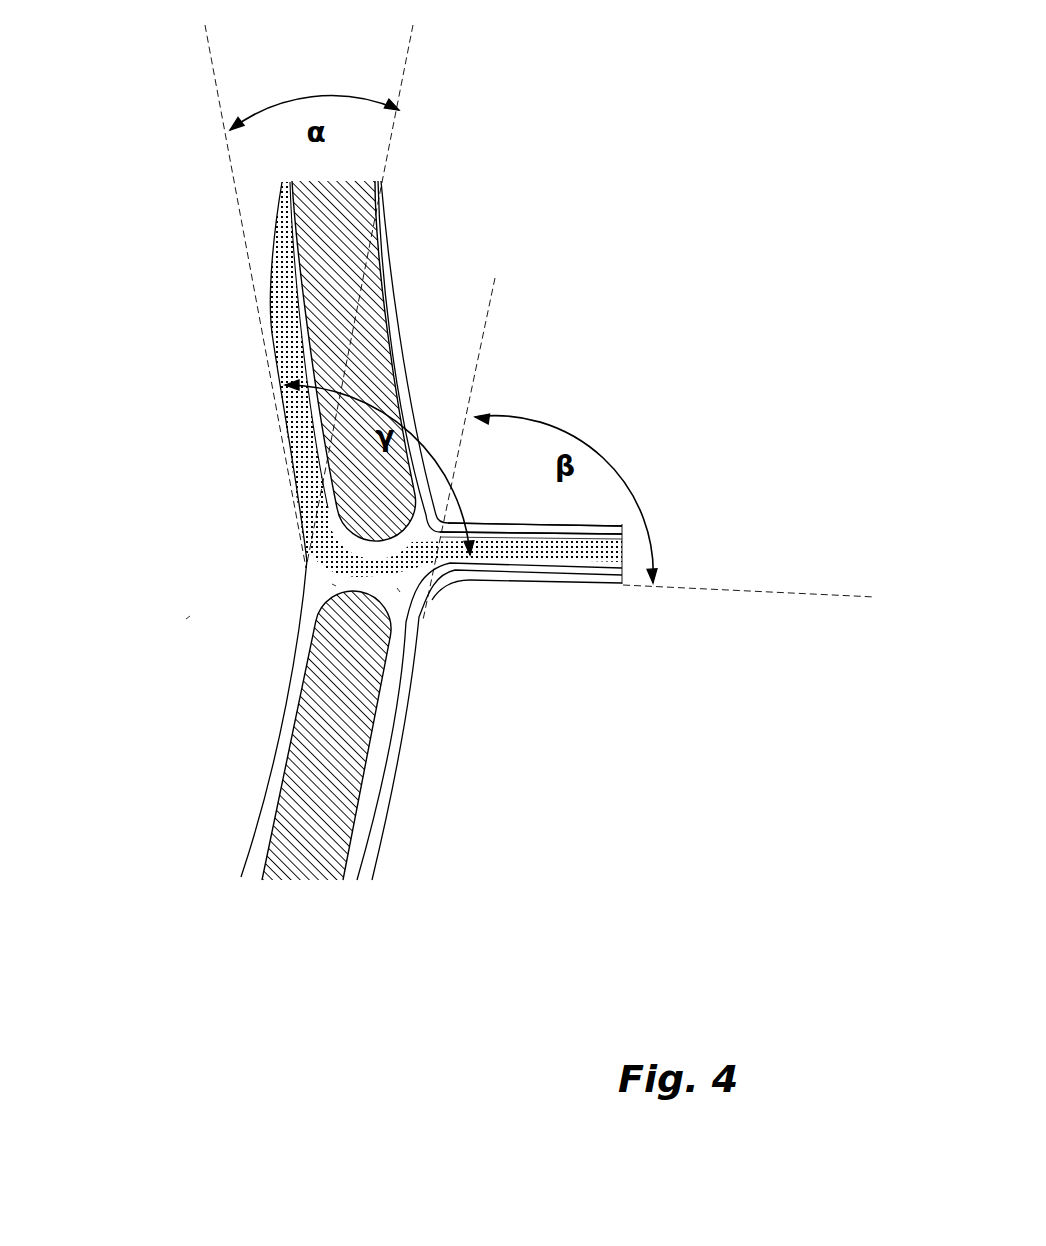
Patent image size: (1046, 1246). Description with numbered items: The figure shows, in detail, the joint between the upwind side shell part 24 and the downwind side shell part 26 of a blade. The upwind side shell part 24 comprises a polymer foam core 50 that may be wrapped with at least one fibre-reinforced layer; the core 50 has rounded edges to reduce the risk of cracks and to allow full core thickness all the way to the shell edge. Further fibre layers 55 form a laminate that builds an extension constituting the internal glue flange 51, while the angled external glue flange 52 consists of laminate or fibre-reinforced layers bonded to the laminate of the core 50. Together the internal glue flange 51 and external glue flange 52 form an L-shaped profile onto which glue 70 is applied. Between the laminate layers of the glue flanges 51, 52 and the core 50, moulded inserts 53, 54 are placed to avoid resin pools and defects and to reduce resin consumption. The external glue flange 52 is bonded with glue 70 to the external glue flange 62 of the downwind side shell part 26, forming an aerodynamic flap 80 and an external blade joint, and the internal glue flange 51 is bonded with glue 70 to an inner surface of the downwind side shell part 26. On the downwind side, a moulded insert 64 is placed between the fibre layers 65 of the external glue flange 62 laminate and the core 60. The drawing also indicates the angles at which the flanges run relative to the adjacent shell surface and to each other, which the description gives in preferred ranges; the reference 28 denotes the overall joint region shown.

The upwind side shell part 24 is at (343, 720).
The downwind side shell part 26 is at (379, 371).
The junction region 28 is at (180, 624).
The polymer foam core 50 is at (310, 778).
The internal glue flange 51 is at (272, 407).
The external glue flange 52 is at (575, 577).
The moulded insert 53 is at (326, 582).
The moulded insert 54 is at (404, 598).
The fibre layers 55 is at (290, 677).
The core 60 is at (357, 367).
The external glue flange 62 is at (527, 522).
The moulded insert 64 is at (473, 523).
The fibre layers 65 is at (500, 526).
The glue 70 is at (312, 470).
The aerodynamic flap 80 is at (632, 551).